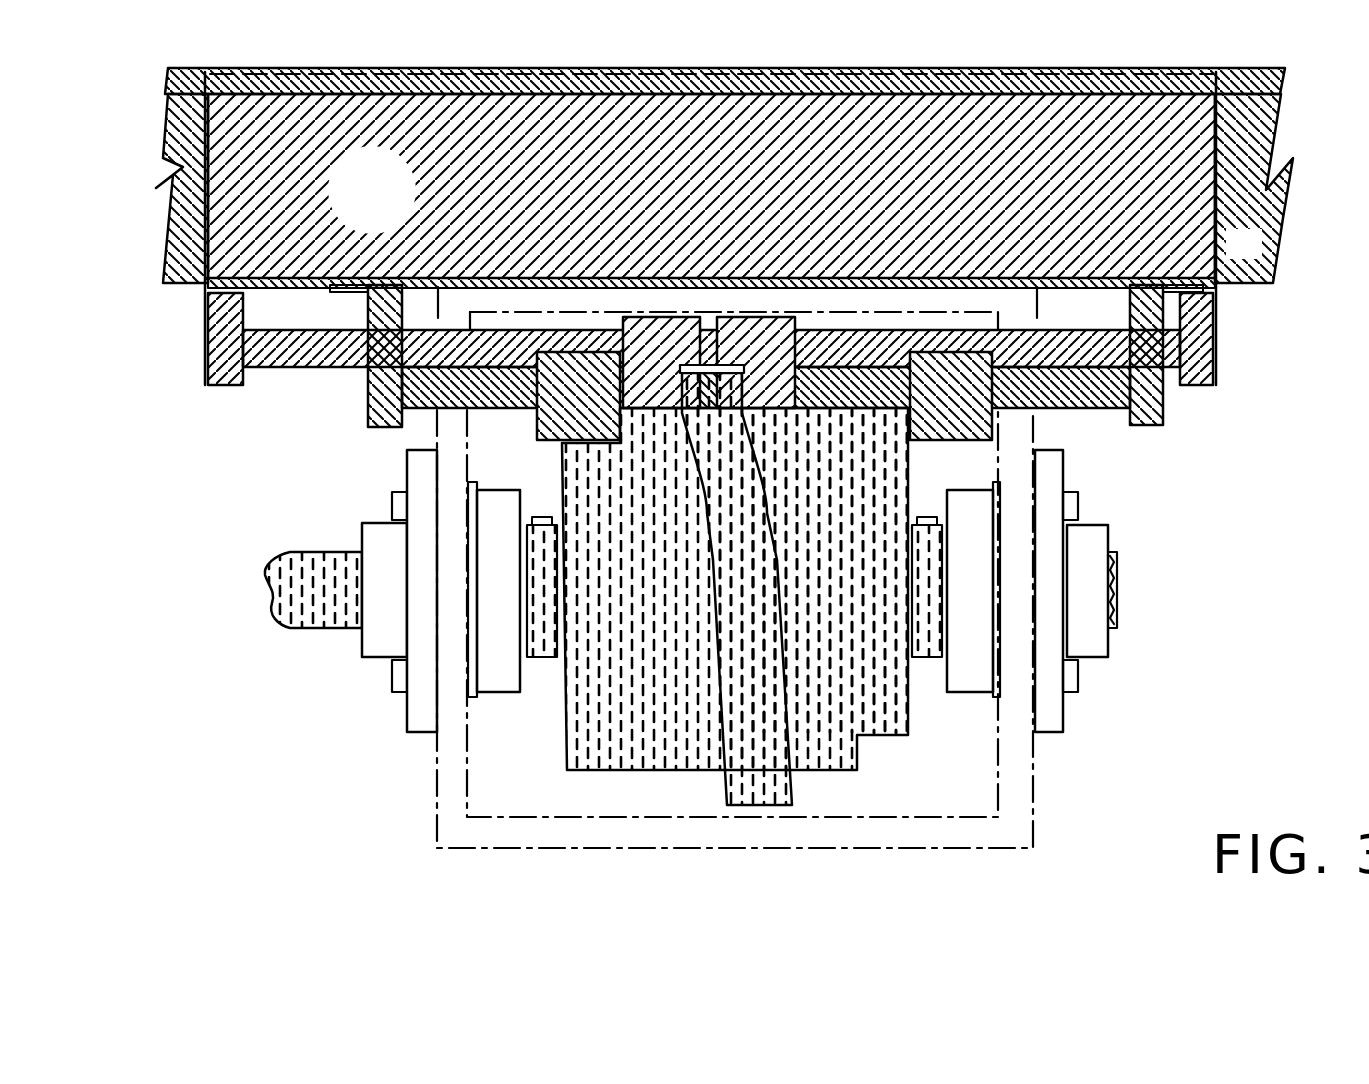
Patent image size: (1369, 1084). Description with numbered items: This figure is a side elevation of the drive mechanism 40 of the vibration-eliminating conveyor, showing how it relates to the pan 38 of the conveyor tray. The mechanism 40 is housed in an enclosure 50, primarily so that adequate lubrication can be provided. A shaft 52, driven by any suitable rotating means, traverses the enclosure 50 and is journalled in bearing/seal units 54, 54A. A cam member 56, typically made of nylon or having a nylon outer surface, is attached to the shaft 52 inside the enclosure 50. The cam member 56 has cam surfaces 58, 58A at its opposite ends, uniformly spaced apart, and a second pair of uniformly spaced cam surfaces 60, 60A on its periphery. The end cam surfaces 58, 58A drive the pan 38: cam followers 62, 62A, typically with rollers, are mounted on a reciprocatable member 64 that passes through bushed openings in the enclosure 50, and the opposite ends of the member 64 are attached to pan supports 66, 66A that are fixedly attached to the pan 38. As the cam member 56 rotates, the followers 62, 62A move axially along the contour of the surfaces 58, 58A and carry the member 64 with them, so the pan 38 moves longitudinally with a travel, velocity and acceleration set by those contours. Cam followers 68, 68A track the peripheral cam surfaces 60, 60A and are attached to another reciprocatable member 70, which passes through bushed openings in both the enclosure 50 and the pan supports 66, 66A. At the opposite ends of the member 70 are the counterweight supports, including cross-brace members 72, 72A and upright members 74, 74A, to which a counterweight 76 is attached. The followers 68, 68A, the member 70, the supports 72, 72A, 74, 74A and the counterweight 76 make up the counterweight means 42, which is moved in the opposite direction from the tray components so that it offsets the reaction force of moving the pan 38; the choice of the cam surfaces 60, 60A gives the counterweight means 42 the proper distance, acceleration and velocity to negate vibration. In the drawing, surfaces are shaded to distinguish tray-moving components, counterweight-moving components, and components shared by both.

The pan 38 is at (1256, 256).
The counterweight 76 is at (358, 204).
The upright member 74 is at (155, 228).
The upright member 74A is at (1277, 228).
The cross-brace member 72 is at (179, 354).
The cross-brace member 72A is at (1256, 341).
The reciprocatable member 70 is at (670, 395).
The pan support 66 is at (335, 361).
The pan support 66A is at (1211, 359).
The reciprocatable member 64 is at (718, 417).
The cam follower 68 is at (448, 419).
The cam follower 68A is at (1076, 408).
The cam follower 62 is at (509, 411).
The cam follower 62A is at (973, 407).
The cam surface 60 is at (640, 589).
The cam surface 60A is at (934, 590).
The cam member 56 is at (610, 790).
The shaft 52 is at (280, 616).
The bearing/seal unit 54 is at (335, 594).
The bearing/seal unit 54A is at (1135, 598).
The cam surface 58 is at (416, 591).
The cam surface 58A is at (1033, 591).
The enclosure 50 is at (798, 580).
The drive mechanism 40 is at (401, 816).
The counterweight means 42 is at (132, 358).